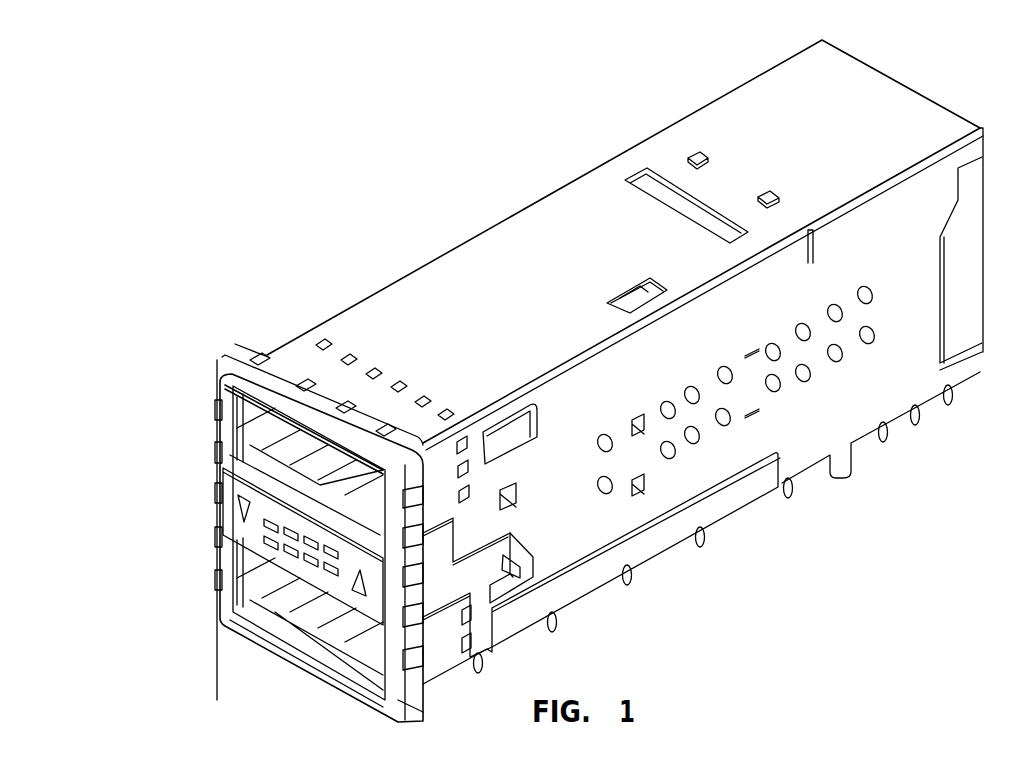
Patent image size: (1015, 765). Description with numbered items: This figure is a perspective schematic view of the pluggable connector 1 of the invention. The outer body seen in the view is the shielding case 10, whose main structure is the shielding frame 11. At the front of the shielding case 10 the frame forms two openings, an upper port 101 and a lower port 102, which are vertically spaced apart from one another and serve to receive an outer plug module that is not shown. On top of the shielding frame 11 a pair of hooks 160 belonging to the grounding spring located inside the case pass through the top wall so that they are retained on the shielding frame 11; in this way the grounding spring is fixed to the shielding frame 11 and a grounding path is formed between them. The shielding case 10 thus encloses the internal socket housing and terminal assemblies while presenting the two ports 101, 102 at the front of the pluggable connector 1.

The pluggable connector 1 is at (458, 103).
The shielding case 10 is at (372, 298).
The shielding frame 11 is at (765, 108).
The hooks 160 is at (696, 150).
The upper port 101 is at (237, 413).
The lower port 102 is at (237, 563).